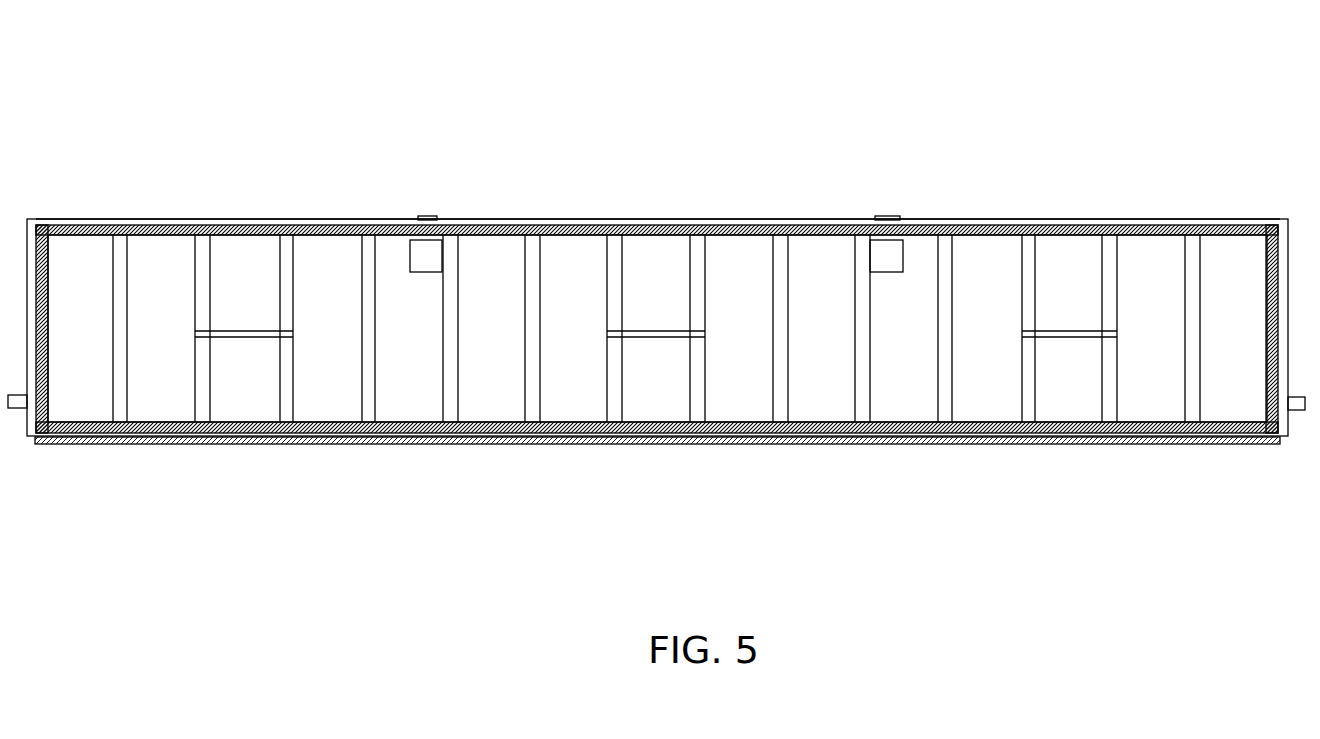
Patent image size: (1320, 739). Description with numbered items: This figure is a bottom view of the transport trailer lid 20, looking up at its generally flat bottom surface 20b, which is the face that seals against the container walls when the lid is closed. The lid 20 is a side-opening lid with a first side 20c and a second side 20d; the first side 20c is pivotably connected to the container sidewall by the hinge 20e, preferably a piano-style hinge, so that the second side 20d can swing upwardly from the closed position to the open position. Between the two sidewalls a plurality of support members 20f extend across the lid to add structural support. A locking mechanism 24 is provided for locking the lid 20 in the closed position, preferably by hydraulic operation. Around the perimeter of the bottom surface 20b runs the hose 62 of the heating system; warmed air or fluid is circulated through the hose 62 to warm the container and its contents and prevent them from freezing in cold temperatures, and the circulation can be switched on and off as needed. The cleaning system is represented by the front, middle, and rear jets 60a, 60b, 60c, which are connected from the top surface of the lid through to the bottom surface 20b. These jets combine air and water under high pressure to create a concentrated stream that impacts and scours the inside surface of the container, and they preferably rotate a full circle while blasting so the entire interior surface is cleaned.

The lid 20 is at (876, 104).
The bottom surface 20b is at (512, 323).
The first side 20c is at (1142, 221).
The second side 20d is at (1097, 445).
The hinge 20e is at (355, 445).
The support members 20f is at (302, 267).
The locking mechanism 24 is at (442, 240).
The front jet 60a is at (236, 331).
The middle jet 60b is at (655, 331).
The rear jet 60c is at (1087, 331).
The hose 62 is at (720, 233).